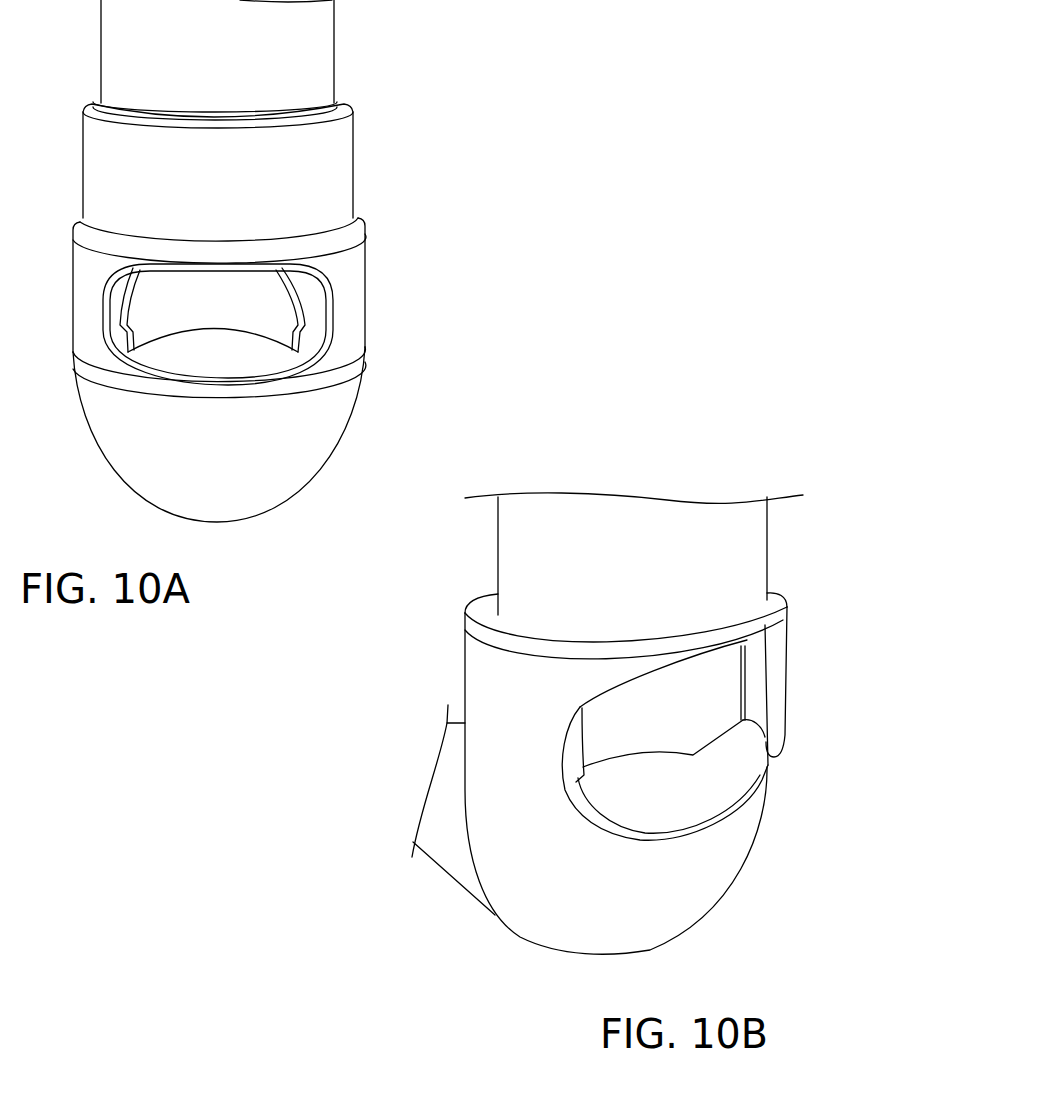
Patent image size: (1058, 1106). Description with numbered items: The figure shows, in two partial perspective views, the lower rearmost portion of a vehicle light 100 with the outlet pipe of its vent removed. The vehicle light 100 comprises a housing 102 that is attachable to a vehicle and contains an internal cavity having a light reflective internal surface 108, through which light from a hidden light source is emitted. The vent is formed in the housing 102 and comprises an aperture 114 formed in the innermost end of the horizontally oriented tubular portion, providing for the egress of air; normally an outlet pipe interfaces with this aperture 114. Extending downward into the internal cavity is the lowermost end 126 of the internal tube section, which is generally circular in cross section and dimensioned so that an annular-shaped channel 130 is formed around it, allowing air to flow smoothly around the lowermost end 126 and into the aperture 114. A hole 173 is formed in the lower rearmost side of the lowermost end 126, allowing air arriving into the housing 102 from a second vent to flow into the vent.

In FIG. 10A, the vehicle light 100 is at (446, 67).
In FIG. 10B, the vehicle light 100 is at (812, 575).
In FIG. 10A, the housing 102 is at (340, 172).
In FIG. 10B, the housing 102 is at (558, 563).
In FIG. 10A, the light reflective internal surface 108 is at (233, 312).
In FIG. 10A, the aperture 114 is at (257, 357).
In FIG. 10B, the aperture 114 is at (728, 748).
In FIG. 10A, the lowermost end 126 is at (310, 292).
In FIG. 10B, the lowermost end 126 is at (743, 677).
In FIG. 10B, the annular-shaped channel 130 is at (752, 697).
In FIG. 10A, the hole 173 is at (132, 305).